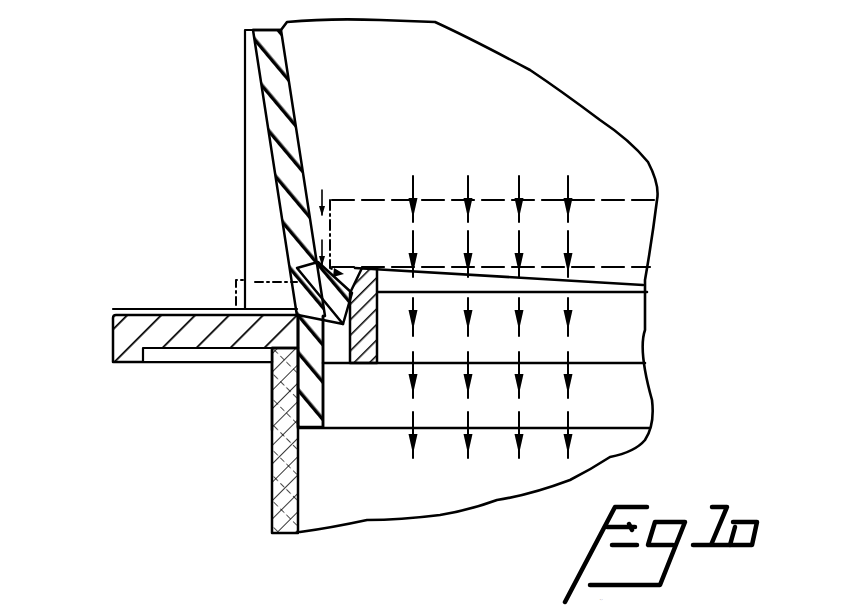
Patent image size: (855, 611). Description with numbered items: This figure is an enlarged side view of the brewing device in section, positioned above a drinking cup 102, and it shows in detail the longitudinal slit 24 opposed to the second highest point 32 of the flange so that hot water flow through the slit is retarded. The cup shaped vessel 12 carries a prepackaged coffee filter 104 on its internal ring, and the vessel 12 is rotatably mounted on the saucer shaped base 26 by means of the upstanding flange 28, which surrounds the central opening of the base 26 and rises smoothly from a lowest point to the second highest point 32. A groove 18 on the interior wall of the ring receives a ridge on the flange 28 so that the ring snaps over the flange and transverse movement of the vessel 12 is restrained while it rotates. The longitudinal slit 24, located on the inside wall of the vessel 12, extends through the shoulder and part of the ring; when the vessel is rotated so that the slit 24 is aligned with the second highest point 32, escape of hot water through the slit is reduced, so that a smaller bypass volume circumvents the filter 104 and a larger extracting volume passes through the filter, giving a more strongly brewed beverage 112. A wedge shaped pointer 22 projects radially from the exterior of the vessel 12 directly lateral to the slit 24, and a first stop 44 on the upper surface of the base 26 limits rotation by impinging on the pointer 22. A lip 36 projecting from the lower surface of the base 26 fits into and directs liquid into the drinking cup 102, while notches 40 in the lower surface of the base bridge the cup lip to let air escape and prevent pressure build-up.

The cup shaped vessel 12 is at (260, 103).
The wedge shaped pointer 22 is at (243, 168).
The longitudinal slit 24 is at (310, 267).
The second highest point of the flange 32 is at (352, 272).
The first stop 44 is at (236, 291).
The base 26 is at (125, 346).
The notches 40 is at (170, 358).
The drinking cup 102 is at (272, 506).
The groove 18 is at (287, 378).
The upstanding flange 28 is at (273, 417).
The lip 36 is at (632, 398).
The prepackaged coffee filter 104 is at (632, 228).
The brewed beverage 112 is at (572, 438).